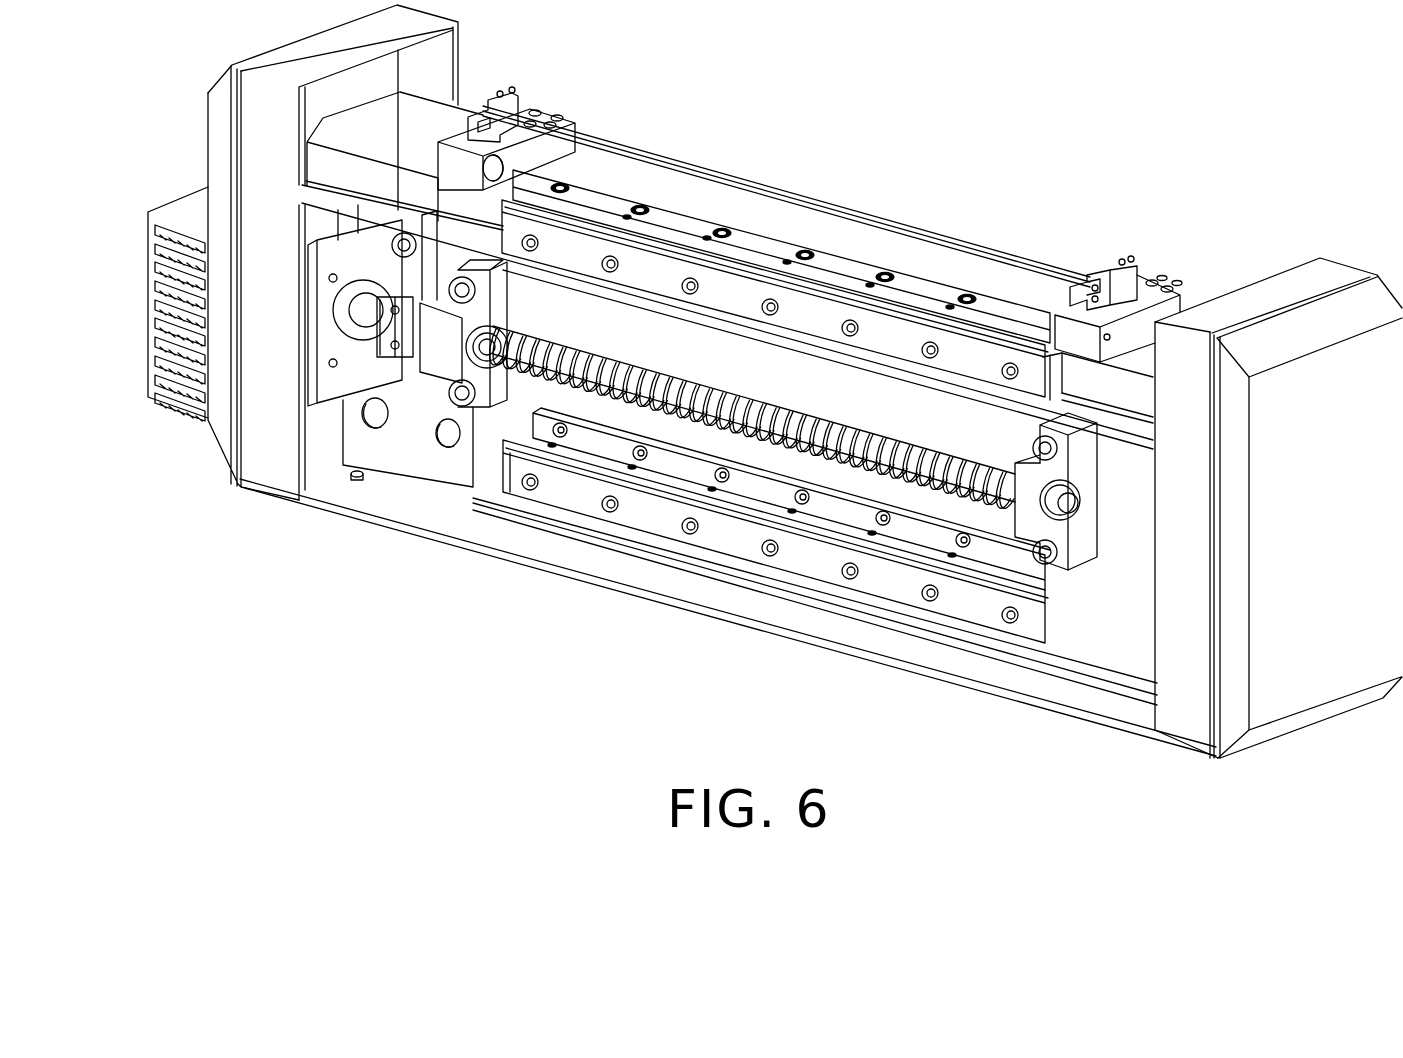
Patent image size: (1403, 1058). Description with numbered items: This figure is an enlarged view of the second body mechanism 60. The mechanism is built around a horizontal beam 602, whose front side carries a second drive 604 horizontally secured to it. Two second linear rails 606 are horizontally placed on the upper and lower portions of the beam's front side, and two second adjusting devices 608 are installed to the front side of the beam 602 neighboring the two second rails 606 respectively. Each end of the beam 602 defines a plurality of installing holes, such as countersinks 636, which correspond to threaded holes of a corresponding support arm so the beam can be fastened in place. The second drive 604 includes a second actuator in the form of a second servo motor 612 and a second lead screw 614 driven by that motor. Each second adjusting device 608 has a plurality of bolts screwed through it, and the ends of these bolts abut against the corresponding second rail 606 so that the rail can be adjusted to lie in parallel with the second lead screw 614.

The second body mechanism 60 is at (645, 125).
The horizontal beam 602 is at (727, 200).
The second drive 604 is at (925, 270).
The second linear rail 606 is at (980, 365).
The second adjusting device 608 is at (845, 424).
The second servo motor 612 is at (305, 242).
The second lead screw 614 is at (662, 397).
The countersink 636 is at (368, 425).